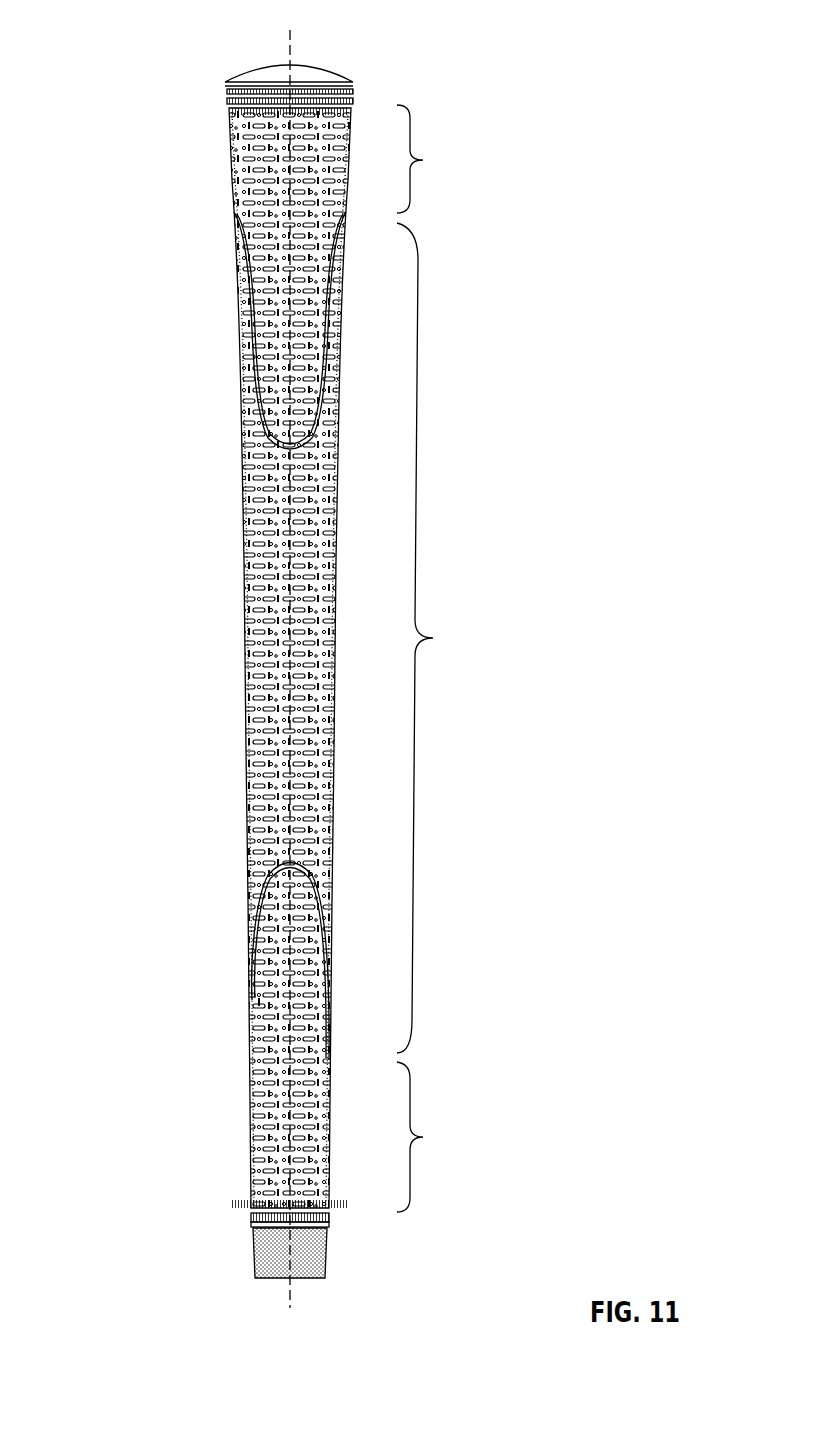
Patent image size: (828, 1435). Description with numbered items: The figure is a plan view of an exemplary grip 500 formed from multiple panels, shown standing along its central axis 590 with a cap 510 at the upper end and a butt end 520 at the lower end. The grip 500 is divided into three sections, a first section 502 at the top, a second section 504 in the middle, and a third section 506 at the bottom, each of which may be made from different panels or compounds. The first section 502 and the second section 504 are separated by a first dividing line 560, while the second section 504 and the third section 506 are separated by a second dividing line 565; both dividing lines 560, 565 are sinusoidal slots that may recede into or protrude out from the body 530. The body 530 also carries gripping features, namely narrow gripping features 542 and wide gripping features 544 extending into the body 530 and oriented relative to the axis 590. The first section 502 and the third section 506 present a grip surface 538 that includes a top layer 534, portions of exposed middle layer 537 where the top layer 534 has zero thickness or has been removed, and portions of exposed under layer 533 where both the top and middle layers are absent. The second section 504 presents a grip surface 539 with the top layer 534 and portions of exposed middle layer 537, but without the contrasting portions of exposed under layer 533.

The grip 500 is at (146, 36).
The cap 510 is at (300, 68).
The shaft end / butt 520 is at (260, 1262).
The axis 590 is at (288, 1285).
The first section 502 is at (433, 159).
The second section 504 is at (438, 638).
The third section 506 is at (433, 1137).
The first dividing line 560 is at (248, 276).
The second dividing line 565 is at (256, 926).
The portions of exposed middle layer 537 is at (233, 138).
The portions of exposed under layer 533 is at (236, 176).
The grip surface 538 is at (226, 190).
The body 530 is at (242, 312).
The wide gripping features 544 is at (246, 411).
The grip surface 539 is at (234, 452).
The narrow gripping features 542 is at (251, 599).
The top layer 534 is at (258, 743).